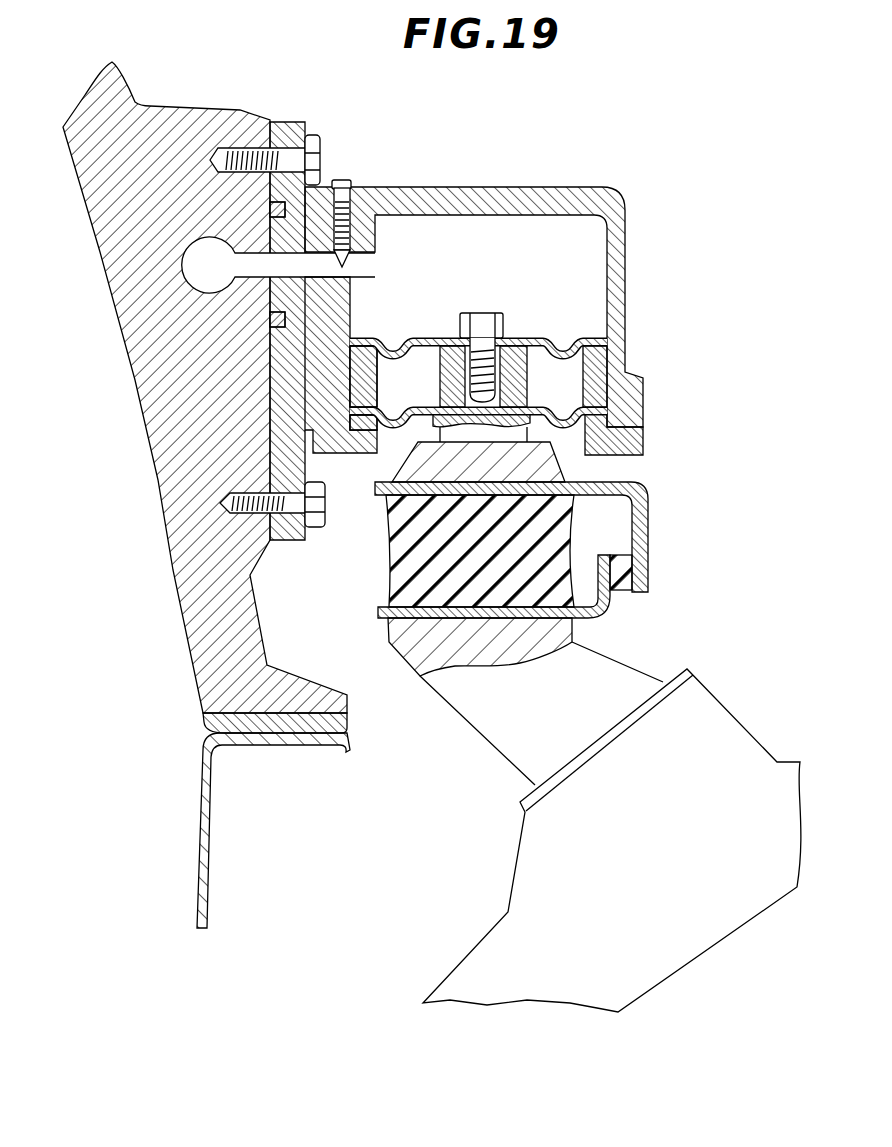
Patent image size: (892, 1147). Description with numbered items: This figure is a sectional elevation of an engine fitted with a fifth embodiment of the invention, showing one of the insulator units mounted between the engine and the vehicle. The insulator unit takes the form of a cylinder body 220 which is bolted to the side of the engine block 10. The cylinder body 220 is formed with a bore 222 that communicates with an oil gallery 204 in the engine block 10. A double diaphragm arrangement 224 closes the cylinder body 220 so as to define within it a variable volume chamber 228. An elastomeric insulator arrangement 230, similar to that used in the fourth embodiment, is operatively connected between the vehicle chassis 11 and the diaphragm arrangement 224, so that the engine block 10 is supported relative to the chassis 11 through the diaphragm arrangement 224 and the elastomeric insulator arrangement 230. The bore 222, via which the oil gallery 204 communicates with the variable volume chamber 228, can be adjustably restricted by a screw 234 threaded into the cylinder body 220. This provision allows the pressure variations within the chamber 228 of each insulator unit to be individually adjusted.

The engine block 10 is at (226, 121).
The vehicle chassis 11 is at (615, 673).
The oil gallery 204 is at (197, 275).
The cylinder body 220 is at (543, 197).
The bore 222 is at (360, 272).
The double diaphragm arrangement 224 is at (537, 322).
The variable volume chamber 228 is at (593, 237).
The elastomeric insulator arrangement 230 is at (560, 533).
The screw 234 is at (351, 187).